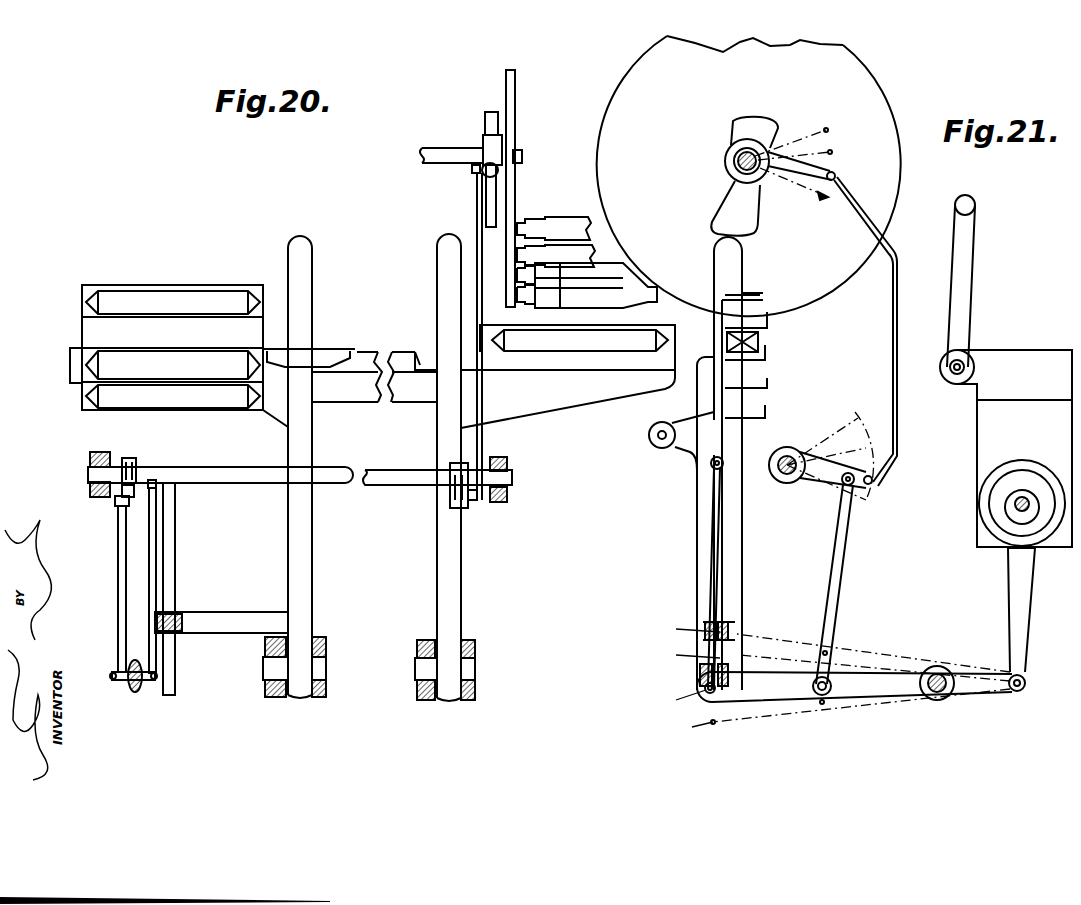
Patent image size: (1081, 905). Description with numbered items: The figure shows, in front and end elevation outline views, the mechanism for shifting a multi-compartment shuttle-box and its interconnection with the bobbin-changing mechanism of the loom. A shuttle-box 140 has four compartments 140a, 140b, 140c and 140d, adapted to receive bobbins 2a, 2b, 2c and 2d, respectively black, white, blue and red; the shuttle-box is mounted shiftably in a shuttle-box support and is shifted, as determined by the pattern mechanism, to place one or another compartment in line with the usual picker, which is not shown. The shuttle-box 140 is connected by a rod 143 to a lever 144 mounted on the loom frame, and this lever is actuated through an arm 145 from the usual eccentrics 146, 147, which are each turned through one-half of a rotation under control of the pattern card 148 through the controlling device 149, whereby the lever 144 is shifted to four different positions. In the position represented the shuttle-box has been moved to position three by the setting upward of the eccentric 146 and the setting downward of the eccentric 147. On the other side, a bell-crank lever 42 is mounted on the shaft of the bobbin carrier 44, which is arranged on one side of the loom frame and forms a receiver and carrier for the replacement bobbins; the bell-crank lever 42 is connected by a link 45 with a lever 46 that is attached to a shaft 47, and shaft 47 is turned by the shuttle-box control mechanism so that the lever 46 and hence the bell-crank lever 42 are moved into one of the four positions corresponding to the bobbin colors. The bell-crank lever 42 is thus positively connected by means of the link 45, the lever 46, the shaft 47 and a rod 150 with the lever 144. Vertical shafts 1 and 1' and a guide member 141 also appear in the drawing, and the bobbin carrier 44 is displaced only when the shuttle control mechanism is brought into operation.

In FIG. 20, the shaft 1 is at (448, 467).
In FIG. 20, the second shaft 1' is at (303, 467).
In FIG. 20, the bobbin 2a is at (140, 395).
In FIG. 20, the bobbin 2b is at (128, 360).
In FIG. 20, the bobbin 2c is at (597, 343).
In FIG. 20, the bobbin 2d is at (218, 307).
In FIG. 20, the bell-crank lever 42 is at (494, 171).
In FIG. 21, the bell-crank lever 42 is at (787, 173).
In FIG. 20, the bobbin carrier 44 is at (508, 117).
In FIG. 21, the bobbin carrier 44 is at (858, 83).
In FIG. 20, the link 45 is at (480, 395).
In FIG. 21, the link 45 is at (897, 293).
In FIG. 20, the lever 46 is at (137, 482).
In FIG. 21, the lever 46 is at (872, 486).
In FIG. 20, the shaft 47 is at (378, 473).
In FIG. 21, the shaft 47 is at (787, 483).
In FIG. 20, the shuttle-box 140 is at (130, 279).
In FIG. 20, the compartment 140a is at (87, 387).
In FIG. 21, the compartment 140a is at (768, 411).
In FIG. 20, the compartment 140b is at (86, 372).
In FIG. 21, the compartment 140b is at (768, 381).
In FIG. 20, the compartment 140c is at (86, 320).
In FIG. 21, the compartment 140c is at (768, 347).
In FIG. 20, the compartment 140d is at (88, 291).
In FIG. 21, the compartment 140d is at (768, 321).
In FIG. 20, the guide stand 141 is at (176, 527).
In FIG. 21, the guide stand 141 is at (720, 420).
In FIG. 20, the rod 143 is at (156, 564).
In FIG. 21, the rod 143 is at (712, 548).
In FIG. 20, the lever 144 is at (138, 693).
In FIG. 21, the lever 144 is at (860, 678).
In FIG. 21, the arm 145 is at (1018, 612).
In FIG. 21, the eccentric 146 is at (1003, 490).
In FIG. 21, the eccentric 147 is at (1012, 514).
In FIG. 21, the pattern card 148 is at (968, 264).
In FIG. 21, the controlling device 149 is at (1007, 368).
In FIG. 20, the rod 150 is at (127, 598).
In FIG. 21, the rod 150 is at (838, 578).